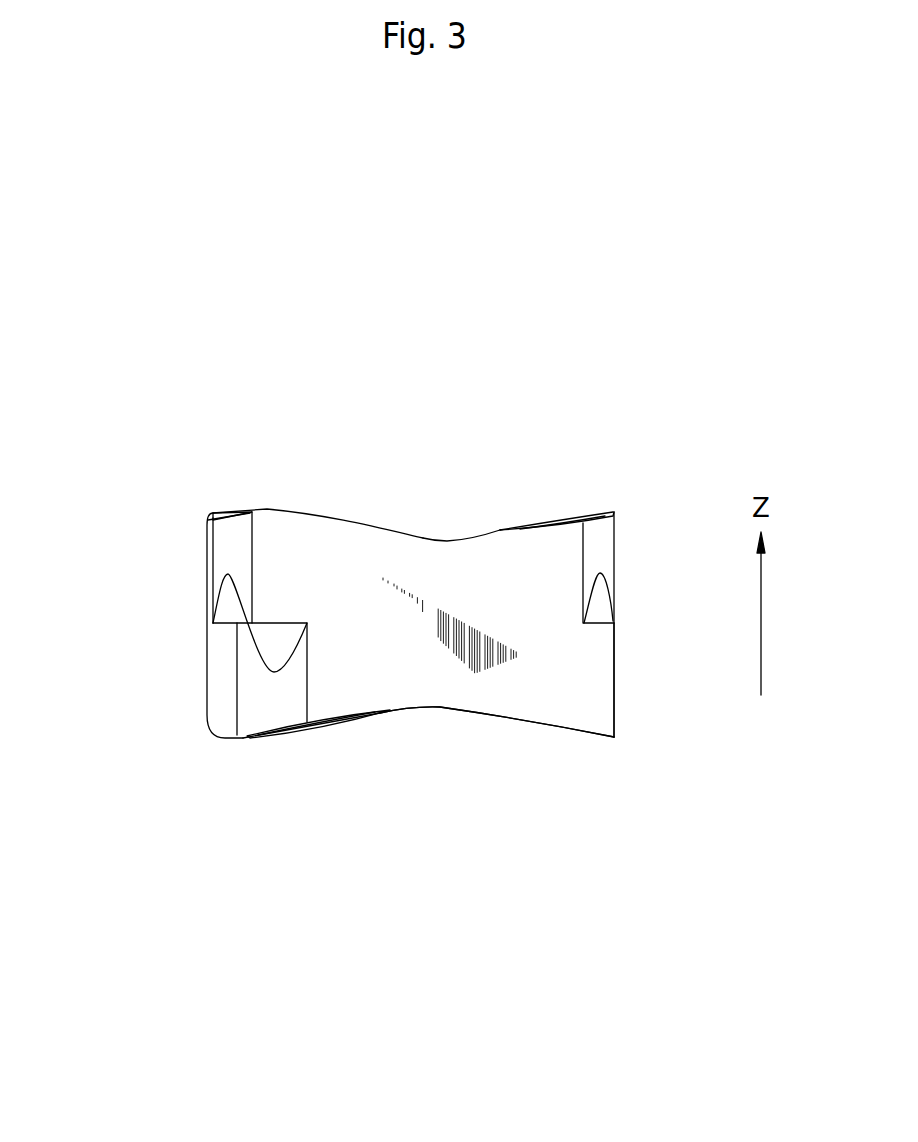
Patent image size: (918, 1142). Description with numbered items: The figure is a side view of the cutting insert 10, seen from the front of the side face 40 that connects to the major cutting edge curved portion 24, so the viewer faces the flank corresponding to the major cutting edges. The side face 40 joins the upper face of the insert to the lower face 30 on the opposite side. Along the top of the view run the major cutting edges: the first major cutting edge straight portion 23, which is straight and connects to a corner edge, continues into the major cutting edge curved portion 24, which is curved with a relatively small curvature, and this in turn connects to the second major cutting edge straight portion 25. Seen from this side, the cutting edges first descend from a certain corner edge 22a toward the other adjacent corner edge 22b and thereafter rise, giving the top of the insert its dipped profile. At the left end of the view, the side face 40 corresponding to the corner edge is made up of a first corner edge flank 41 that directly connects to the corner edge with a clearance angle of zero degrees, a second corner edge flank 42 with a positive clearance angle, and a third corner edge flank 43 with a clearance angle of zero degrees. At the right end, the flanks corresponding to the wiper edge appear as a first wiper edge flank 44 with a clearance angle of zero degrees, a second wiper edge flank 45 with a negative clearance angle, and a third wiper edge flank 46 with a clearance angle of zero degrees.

The cutting insert 10 is at (404, 926).
The corner edge 22a is at (268, 508).
The corner edge 22b is at (613, 512).
The first major cutting edge straight portion 23 is at (325, 518).
The major cutting edge curved portion 24 is at (447, 540).
The second major cutting edge straight portion 25 is at (590, 517).
The lower face 30 is at (445, 707).
The side face 40 is at (420, 638).
The first corner edge flank 41 is at (278, 568).
The second corner edge flank 42 is at (272, 645).
The third corner edge flank 43 is at (277, 697).
The first wiper edge flank 44 is at (598, 542).
The second wiper edge flank 45 is at (598, 598).
The third wiper edge flank 46 is at (590, 689).